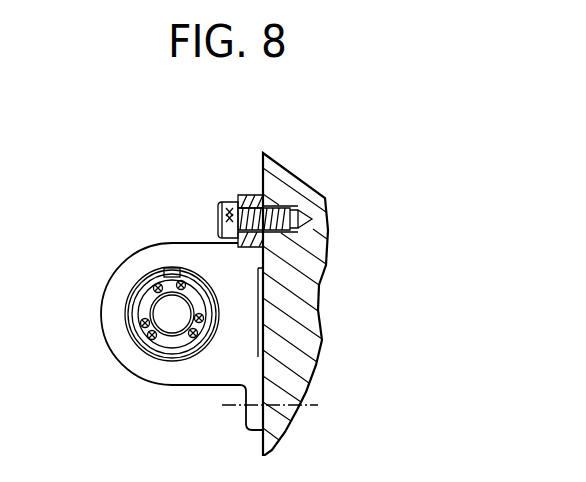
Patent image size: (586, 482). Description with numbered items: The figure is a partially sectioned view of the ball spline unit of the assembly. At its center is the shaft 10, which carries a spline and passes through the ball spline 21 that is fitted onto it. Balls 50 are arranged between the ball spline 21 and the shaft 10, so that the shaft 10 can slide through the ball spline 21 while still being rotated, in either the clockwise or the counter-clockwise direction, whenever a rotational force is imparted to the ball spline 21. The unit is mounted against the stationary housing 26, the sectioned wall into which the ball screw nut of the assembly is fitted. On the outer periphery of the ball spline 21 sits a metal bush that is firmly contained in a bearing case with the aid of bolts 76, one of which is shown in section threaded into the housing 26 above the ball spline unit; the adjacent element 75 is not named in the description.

The shaft 10 is at (175, 308).
The ball spline 21 is at (160, 345).
The stationary housing 26 is at (285, 172).
The balls 50 is at (160, 287).
The threaded boss 75 is at (248, 200).
The bolts 76 is at (225, 204).